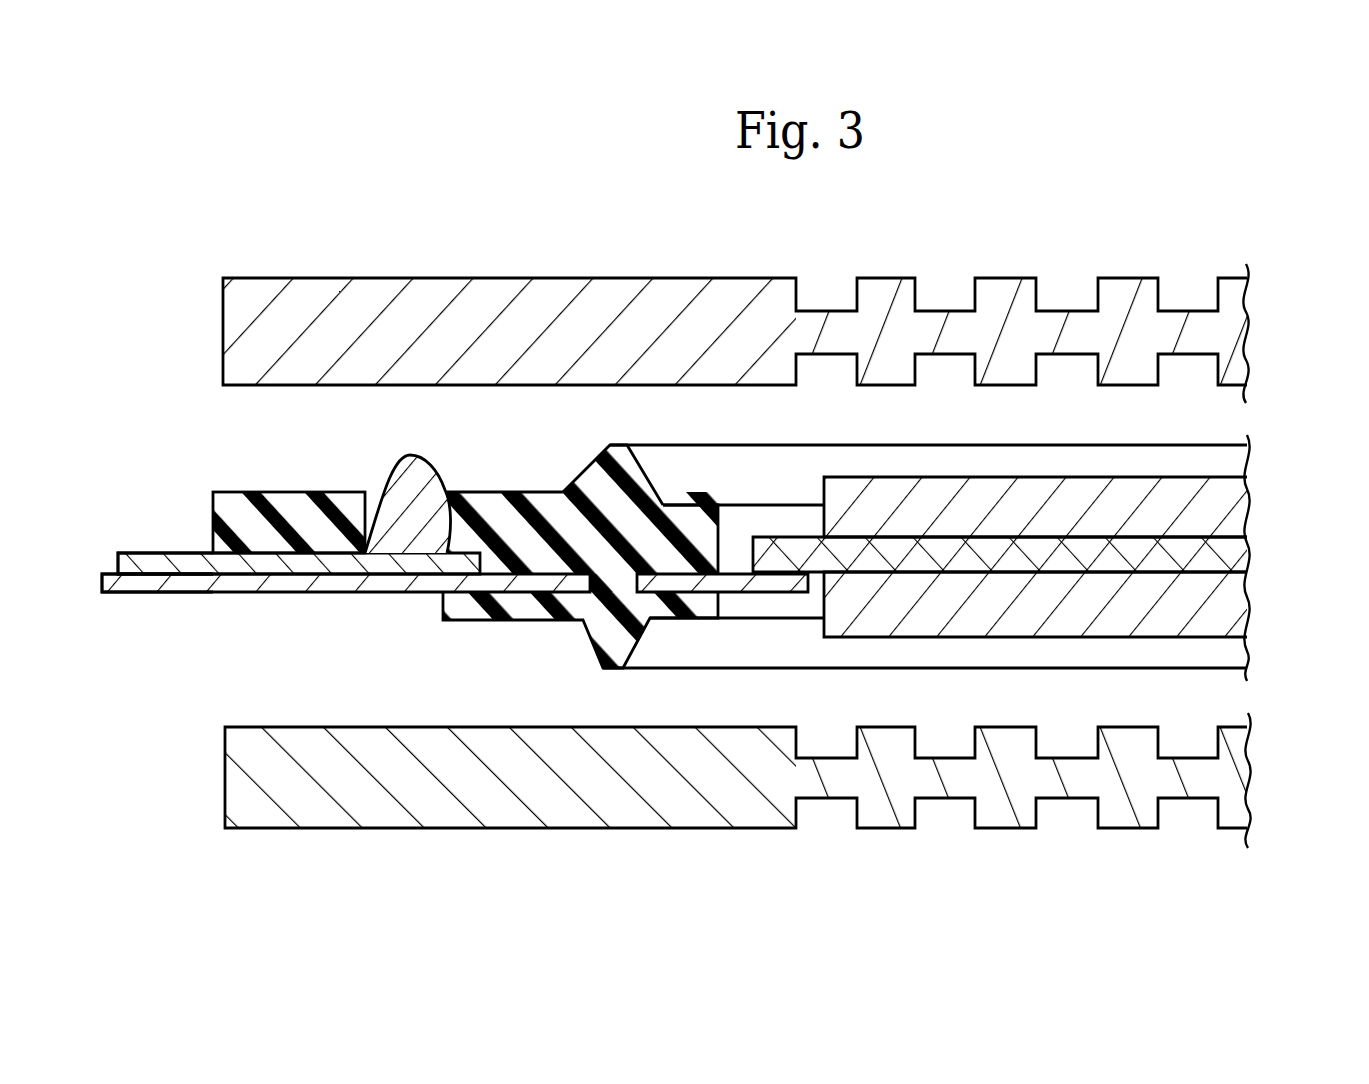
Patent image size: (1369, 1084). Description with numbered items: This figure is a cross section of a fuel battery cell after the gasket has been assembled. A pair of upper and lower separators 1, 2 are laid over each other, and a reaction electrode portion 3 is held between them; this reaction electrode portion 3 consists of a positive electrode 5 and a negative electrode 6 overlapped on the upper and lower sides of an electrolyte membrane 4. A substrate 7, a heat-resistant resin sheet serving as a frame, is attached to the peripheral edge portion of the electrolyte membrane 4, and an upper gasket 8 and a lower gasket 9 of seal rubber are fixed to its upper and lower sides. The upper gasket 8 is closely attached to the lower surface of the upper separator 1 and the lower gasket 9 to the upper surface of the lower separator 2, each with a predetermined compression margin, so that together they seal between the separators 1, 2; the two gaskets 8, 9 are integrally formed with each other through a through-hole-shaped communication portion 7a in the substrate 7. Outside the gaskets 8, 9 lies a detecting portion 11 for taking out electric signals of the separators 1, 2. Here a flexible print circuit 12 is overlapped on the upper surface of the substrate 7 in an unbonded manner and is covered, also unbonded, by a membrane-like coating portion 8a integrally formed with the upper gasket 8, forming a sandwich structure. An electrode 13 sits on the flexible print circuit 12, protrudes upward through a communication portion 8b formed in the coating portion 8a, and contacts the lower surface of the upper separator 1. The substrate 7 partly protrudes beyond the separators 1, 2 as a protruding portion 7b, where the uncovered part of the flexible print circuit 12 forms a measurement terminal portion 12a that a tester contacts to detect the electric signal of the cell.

The upper separator 1 is at (1123, 300).
The lower separator 2 is at (1127, 815).
The reaction electrode portion 3 is at (1200, 476).
The electrolyte membrane 4 is at (1235, 555).
The positive electrode 5 is at (1227, 492).
The negative electrode 6 is at (1235, 605).
The substrate 7 is at (384, 587).
The communication portion 7a is at (633, 582).
The protruding portion 7b is at (140, 582).
The upper gasket 8 is at (612, 482).
The coating portion 8a is at (293, 518).
The communication portion 8b is at (440, 540).
The lower gasket 9 is at (605, 630).
The detecting portion 11 is at (170, 487).
The flexible print circuit 12 is at (337, 563).
The measurement terminal portion 12a is at (143, 562).
The electrode 13 is at (410, 500).